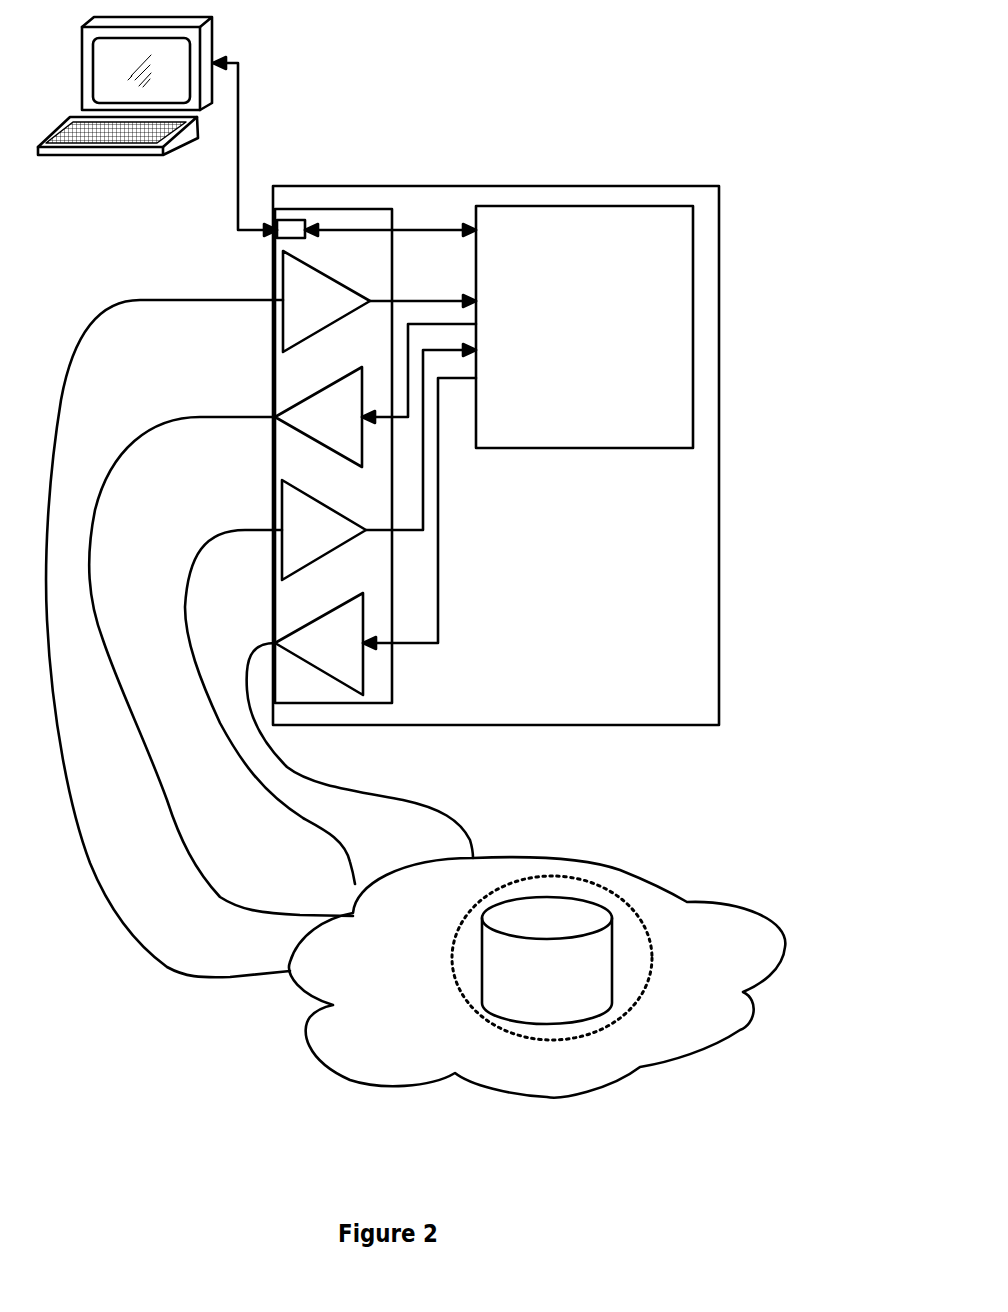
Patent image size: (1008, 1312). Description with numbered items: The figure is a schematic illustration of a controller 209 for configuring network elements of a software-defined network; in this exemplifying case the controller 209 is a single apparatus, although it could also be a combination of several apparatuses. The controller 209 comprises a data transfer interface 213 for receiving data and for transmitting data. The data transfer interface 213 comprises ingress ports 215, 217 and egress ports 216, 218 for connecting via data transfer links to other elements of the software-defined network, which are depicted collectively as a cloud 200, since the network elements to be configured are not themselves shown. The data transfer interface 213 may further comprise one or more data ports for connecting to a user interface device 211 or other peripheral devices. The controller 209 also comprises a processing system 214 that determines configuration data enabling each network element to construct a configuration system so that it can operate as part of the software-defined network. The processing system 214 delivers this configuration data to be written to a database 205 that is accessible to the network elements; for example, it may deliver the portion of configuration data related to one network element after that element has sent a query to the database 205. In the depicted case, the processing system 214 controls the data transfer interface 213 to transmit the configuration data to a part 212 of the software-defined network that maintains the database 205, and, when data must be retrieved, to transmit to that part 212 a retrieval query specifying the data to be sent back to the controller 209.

The cloud 200 is at (537, 977).
The database 205 is at (547, 960).
The controller 209 is at (644, 185).
The user interface device 211 is at (212, 42).
The part of the software-defined network maintaining the database 212 is at (457, 987).
The data transfer interface 213 is at (392, 690).
The processing system 214 is at (584, 327).
The ingress port 215 is at (261, 614).
The egress port 216 is at (282, 620).
The ingress port 217 is at (330, 614).
The egress port 218 is at (361, 618).